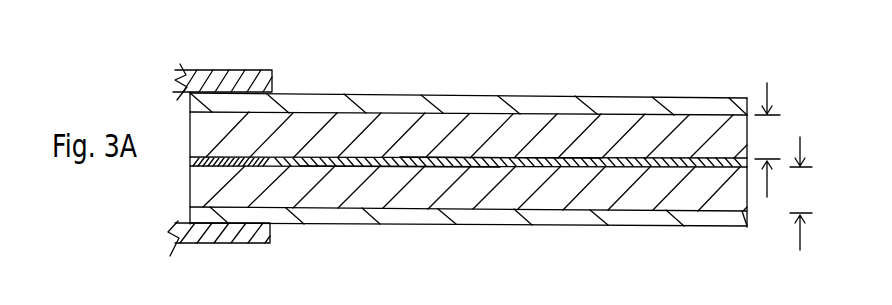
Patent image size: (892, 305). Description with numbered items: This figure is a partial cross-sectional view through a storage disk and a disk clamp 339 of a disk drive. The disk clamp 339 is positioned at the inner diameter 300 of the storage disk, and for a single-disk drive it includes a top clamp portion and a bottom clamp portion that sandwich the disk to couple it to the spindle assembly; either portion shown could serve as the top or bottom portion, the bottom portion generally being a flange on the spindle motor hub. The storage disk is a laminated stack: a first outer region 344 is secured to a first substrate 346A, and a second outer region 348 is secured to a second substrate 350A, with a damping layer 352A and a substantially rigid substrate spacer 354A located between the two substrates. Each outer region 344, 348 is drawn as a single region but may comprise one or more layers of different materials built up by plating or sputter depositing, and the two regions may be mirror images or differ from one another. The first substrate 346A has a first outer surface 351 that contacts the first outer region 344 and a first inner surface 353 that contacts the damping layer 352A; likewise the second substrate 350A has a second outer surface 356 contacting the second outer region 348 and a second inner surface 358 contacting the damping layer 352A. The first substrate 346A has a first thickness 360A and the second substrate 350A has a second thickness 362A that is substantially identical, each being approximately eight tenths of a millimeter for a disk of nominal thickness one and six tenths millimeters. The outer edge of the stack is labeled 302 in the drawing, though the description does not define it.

The inner diameter 300 is at (180, 179).
The substrate edge 302 is at (756, 208).
The disk clamp 339 is at (216, 71).
The first outer region 344 is at (536, 104).
The first substrate 346A is at (205, 127).
The second outer region 348 is at (203, 214).
The second substrate 350A is at (202, 186).
The first outer surface 351 is at (638, 106).
The damping layer 352A is at (395, 158).
The first inner surface 353 is at (497, 158).
The substantially rigid substrate spacer 354A is at (262, 158).
The second outer surface 356 is at (421, 220).
The second inner surface 358 is at (350, 158).
The first thickness 360A is at (768, 125).
The second thickness 362A is at (805, 208).